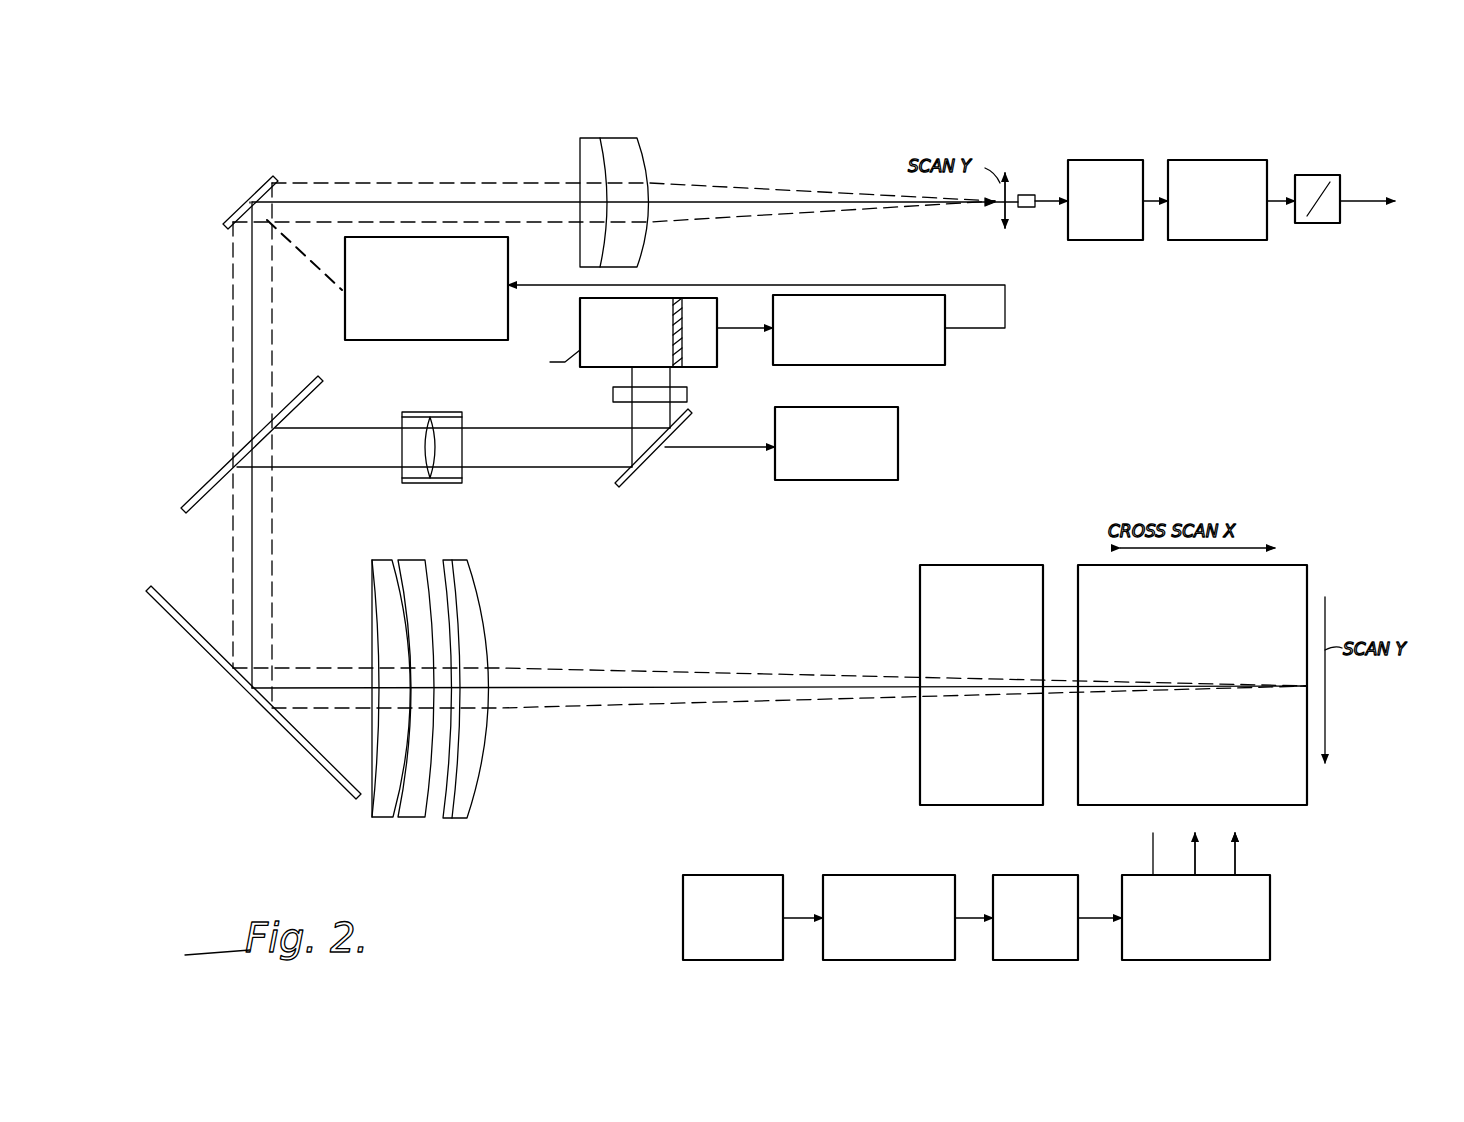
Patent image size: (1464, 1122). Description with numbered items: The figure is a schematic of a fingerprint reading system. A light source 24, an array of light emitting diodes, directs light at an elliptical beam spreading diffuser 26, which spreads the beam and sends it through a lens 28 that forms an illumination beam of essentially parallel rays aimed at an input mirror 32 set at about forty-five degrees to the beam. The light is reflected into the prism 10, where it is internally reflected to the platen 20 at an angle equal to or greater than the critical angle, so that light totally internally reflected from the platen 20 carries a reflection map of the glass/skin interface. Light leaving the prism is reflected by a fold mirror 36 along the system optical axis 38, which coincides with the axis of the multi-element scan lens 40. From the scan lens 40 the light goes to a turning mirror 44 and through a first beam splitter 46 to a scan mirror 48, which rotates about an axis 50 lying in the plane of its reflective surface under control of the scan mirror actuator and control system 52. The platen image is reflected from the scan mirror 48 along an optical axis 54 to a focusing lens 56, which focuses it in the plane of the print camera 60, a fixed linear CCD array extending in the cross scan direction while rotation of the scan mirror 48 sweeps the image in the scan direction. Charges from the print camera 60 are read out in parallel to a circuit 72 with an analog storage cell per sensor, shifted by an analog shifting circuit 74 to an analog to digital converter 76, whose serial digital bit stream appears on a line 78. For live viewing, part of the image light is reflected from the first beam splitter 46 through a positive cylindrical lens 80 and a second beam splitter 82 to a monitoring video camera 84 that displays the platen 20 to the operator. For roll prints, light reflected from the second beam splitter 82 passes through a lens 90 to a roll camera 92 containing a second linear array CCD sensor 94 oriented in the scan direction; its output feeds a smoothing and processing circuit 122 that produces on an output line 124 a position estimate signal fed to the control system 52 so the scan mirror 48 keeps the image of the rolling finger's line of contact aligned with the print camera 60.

The prism 10 is at (1330, 555).
The platen 20 is at (1192, 685).
The light source 24 is at (725, 875).
The elliptical beam spreading diffuser 26 is at (865, 875).
The lens 28 is at (1028, 875).
The input mirror 32 is at (1268, 875).
The fold mirror 36 is at (920, 597).
The system optical axis 38 is at (581, 688).
The multi-element scan lens 40 is at (500, 775).
The turning mirror 44 is at (212, 655).
The first beam splitter 46 is at (210, 485).
The scan mirror 48 is at (240, 208).
The axis 50 is at (250, 195).
The scan mirror actuator and control system 52 is at (345, 320).
The optical axis 54 is at (437, 202).
The focusing lens 56 is at (650, 165).
The print camera 60 is at (1025, 195).
The circuit 72 is at (1100, 160).
The analog shifting circuit 74 is at (1218, 160).
The analog to digital converter 76 is at (1310, 175).
The line 78 is at (1362, 200).
The positive cylindrical lens 80 is at (415, 476).
The second beam splitter 82 is at (633, 470).
The monitoring video camera 84 is at (830, 480).
The lens 90 is at (613, 393).
The roll camera 92 is at (580, 328).
The second linear array CCD sensor 94 is at (695, 367).
The smoothing and processing circuit 122 is at (905, 365).
The output line 124 is at (1005, 328).